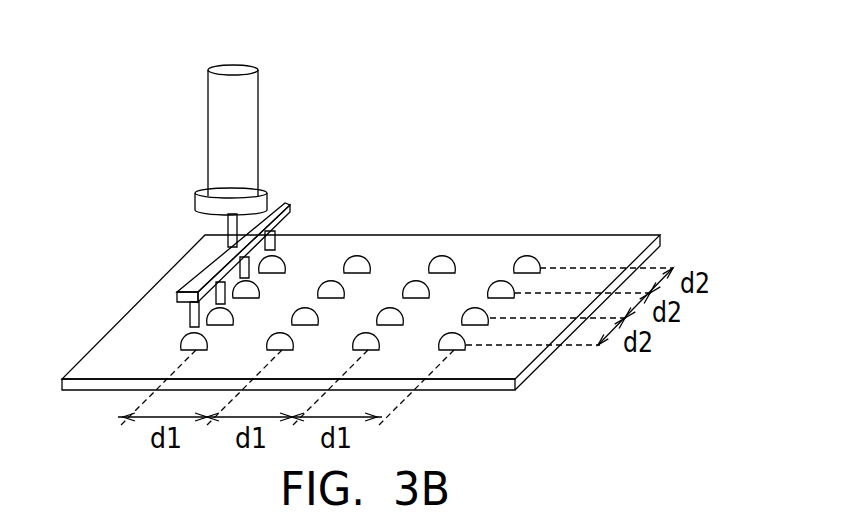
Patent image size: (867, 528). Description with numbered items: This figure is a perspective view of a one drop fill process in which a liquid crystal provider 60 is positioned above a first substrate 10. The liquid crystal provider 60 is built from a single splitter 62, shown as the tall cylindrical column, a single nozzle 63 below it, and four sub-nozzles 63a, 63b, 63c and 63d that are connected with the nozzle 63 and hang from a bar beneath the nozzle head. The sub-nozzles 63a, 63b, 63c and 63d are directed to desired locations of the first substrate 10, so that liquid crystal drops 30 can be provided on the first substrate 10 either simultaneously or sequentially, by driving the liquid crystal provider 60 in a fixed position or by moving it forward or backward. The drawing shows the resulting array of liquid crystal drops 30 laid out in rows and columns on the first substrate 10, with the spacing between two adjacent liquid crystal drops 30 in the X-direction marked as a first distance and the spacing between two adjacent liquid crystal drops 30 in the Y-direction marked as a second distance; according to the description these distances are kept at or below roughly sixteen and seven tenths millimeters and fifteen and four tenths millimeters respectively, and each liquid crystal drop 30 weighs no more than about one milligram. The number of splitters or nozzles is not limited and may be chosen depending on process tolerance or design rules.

The first substrate 10 is at (608, 242).
The liquid crystal drops 30 is at (442, 258).
The liquid crystal provider 60 is at (169, 113).
The splitter 62 is at (248, 92).
The nozzle 63 is at (232, 232).
The sub-nozzle 63a is at (192, 318).
The sub-nozzle 63b is at (221, 284).
The sub-nozzle 63c is at (252, 260).
The sub-nozzle 63d is at (277, 248).